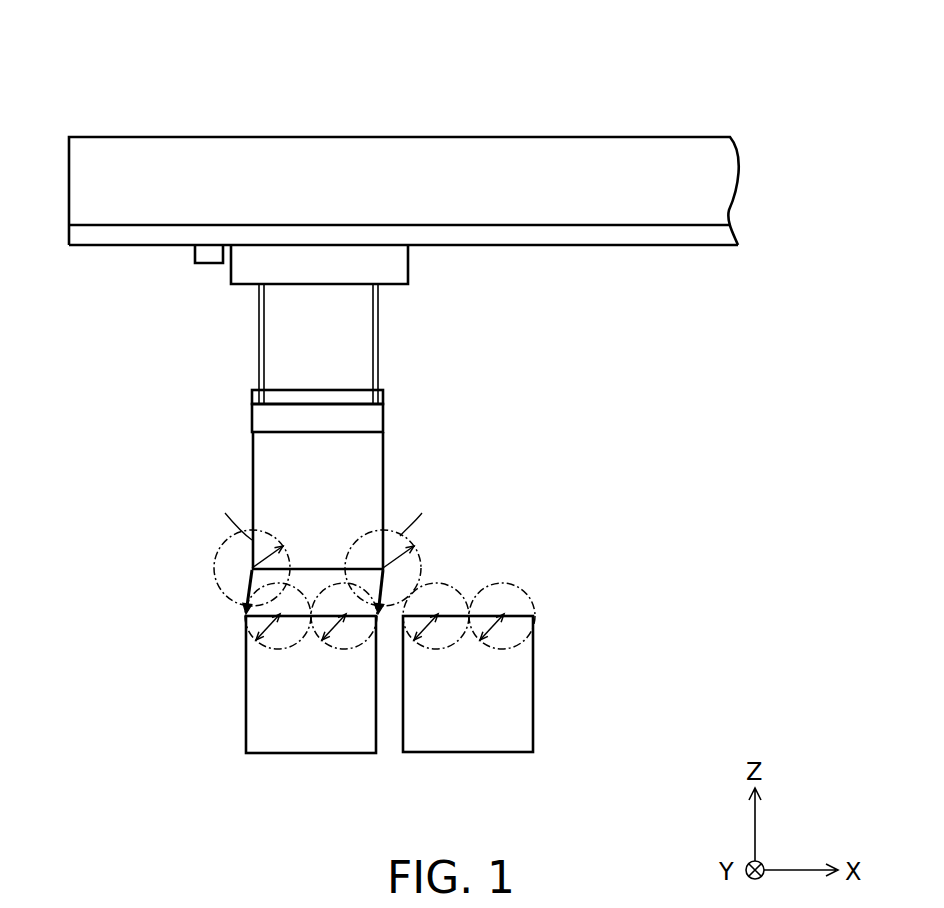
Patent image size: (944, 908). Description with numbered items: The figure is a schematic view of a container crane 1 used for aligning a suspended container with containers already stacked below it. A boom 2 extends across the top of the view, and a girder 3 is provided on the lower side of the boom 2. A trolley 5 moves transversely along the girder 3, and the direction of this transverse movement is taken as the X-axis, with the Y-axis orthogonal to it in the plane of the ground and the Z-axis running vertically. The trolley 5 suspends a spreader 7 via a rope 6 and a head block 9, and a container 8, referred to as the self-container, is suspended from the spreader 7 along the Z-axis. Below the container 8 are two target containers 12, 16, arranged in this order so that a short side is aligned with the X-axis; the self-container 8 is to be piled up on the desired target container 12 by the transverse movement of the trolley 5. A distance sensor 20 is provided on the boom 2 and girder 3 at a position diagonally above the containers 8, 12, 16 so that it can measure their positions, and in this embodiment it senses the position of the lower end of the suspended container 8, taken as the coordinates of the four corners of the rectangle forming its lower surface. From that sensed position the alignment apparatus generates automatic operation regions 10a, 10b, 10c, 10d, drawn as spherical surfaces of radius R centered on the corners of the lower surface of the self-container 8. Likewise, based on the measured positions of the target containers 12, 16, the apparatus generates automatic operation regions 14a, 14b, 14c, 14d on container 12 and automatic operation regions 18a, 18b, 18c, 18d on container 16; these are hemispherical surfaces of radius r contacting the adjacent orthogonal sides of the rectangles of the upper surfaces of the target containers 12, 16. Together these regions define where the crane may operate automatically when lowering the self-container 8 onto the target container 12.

The container crane 1 is at (777, 92).
The boom 2 is at (705, 170).
The girder 3 is at (718, 232).
The trolley 5 is at (390, 258).
The rope 6 is at (258, 345).
The spreader 7 is at (360, 414).
The container 8 is at (365, 465).
The head block 9 is at (277, 398).
The automatic operation region 10a is at (464, 549).
The automatic operation region 10b is at (427, 563).
The automatic operation region 10c is at (175, 549).
The automatic operation region 10d is at (213, 558).
The target container 12 is at (263, 738).
The automatic operation region 14a is at (326, 694).
The automatic operation region 14b is at (353, 648).
The automatic operation region 14c is at (221, 651).
The automatic operation region 14d is at (266, 647).
The target container 16 is at (512, 732).
The automatic operation region 18a is at (567, 651).
The automatic operation region 18b is at (515, 648).
The automatic operation region 18c is at (455, 693).
The automatic operation region 18d is at (452, 647).
The distance sensor 20 is at (208, 258).